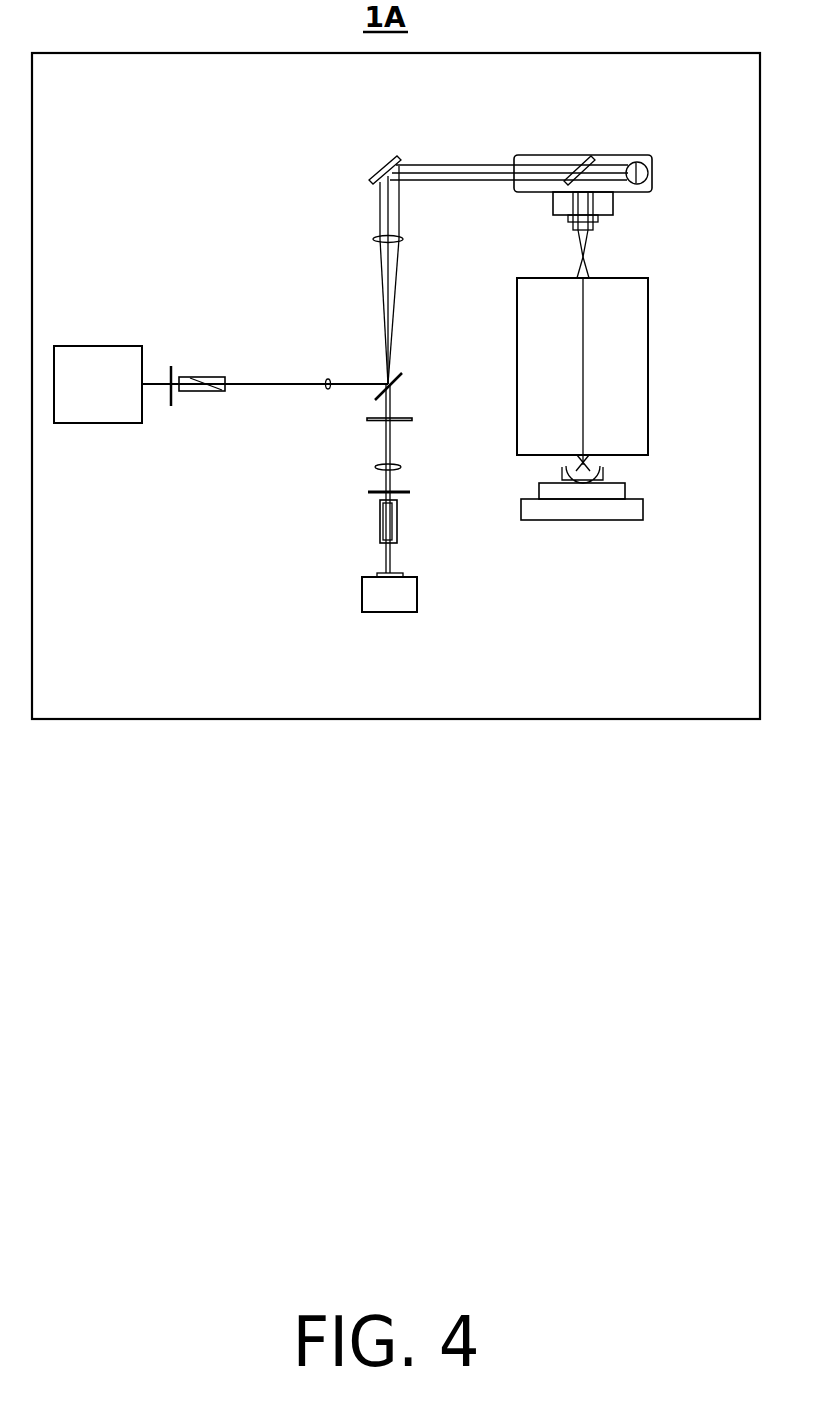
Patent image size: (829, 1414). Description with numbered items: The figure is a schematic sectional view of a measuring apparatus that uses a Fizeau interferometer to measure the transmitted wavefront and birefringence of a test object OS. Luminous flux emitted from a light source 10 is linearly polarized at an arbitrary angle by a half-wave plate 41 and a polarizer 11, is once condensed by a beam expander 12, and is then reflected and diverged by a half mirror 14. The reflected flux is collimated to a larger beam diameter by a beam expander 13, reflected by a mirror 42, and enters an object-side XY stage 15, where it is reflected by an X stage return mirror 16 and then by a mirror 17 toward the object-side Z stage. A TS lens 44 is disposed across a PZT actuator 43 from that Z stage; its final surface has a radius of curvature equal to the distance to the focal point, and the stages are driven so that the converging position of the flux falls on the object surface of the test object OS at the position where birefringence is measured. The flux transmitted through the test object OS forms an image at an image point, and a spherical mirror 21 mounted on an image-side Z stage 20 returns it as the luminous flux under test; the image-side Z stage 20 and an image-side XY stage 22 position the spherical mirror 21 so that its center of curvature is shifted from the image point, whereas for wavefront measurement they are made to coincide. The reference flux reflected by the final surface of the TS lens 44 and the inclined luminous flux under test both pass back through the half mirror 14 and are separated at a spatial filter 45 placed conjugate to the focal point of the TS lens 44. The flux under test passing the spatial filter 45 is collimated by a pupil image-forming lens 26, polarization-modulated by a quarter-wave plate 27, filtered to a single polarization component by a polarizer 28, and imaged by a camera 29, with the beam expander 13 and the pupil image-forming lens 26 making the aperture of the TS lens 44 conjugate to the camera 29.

The light source 10 is at (117, 363).
The λ/2 plate 41 is at (173, 362).
The polarizer 11 is at (225, 377).
The beam expander 12 is at (323, 393).
The mirror 42 is at (372, 194).
The beam expander 13 is at (375, 253).
The half mirror 14 is at (396, 378).
The spatial filter 45 is at (413, 416).
The pupil image-forming lens 26 is at (403, 465).
The λ/4 plate 27 is at (410, 489).
The polarizer 28 is at (398, 522).
The camera 29 is at (403, 598).
The object-side XY stage 15 is at (634, 160).
The X stage return mirror 16 is at (653, 170).
The mirror 17 is at (592, 158).
The PZT actuator 43 is at (567, 214).
The TS lens 44 is at (577, 228).
The test object OS is at (633, 387).
The image-side Z stage 20 is at (623, 491).
The spherical mirror 21 is at (565, 486).
The image-side XY stage 22 is at (638, 515).